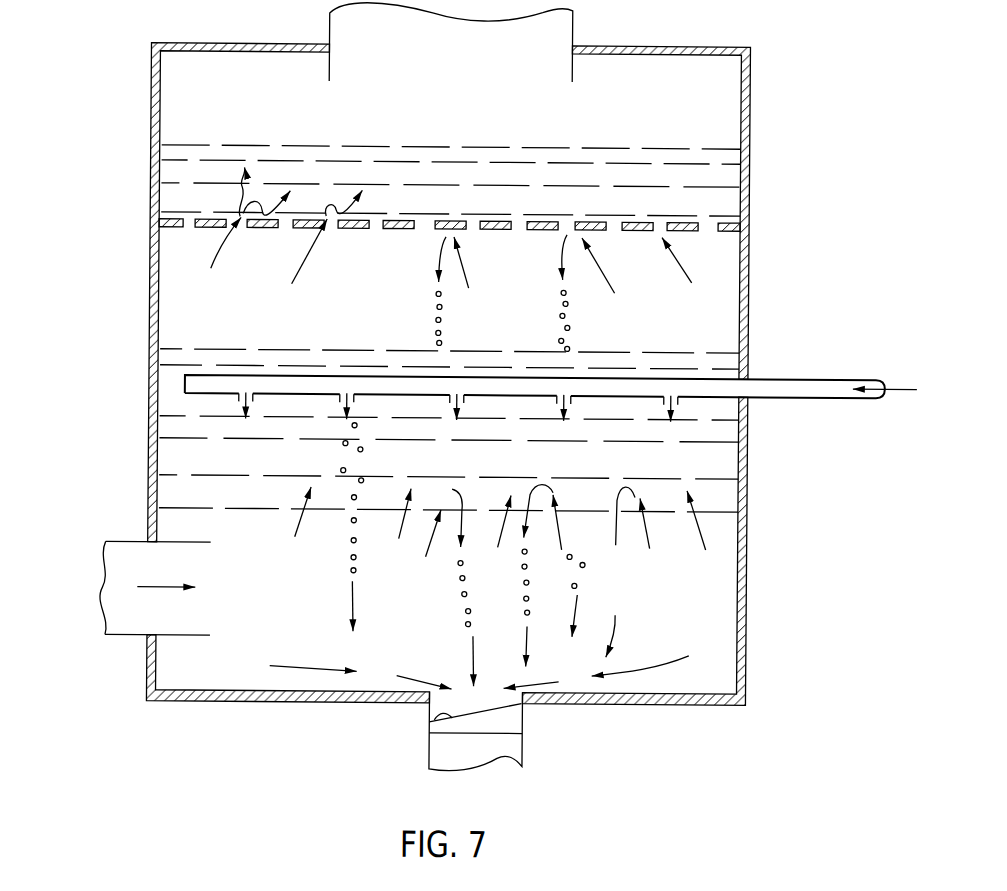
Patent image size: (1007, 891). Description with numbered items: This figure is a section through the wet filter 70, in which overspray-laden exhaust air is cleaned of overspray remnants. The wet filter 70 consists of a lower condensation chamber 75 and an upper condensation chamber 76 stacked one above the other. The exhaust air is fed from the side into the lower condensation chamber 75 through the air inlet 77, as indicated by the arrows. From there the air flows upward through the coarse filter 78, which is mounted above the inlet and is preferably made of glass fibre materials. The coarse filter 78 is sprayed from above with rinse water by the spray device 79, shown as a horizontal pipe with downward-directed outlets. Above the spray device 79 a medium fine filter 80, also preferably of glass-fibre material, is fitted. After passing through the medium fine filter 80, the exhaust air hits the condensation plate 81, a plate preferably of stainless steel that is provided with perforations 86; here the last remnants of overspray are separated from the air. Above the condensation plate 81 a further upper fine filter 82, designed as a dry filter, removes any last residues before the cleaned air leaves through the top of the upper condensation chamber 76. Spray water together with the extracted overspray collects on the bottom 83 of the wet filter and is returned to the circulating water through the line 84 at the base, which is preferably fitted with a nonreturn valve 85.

The wet filter 70 is at (750, 291).
The lower condensation chamber 75 is at (724, 618).
The upper condensation chamber 76 is at (188, 317).
The air inlet 77 is at (137, 630).
The coarse filter 78 is at (723, 463).
The spray device 79 is at (760, 381).
The medium fine filter 80 is at (600, 361).
The condensation plate 81 is at (727, 221).
The upper fine filter 82 is at (183, 145).
The bottom 83 is at (233, 705).
The line 84 is at (526, 745).
The nonreturn valve 85 is at (432, 722).
The perforations 86 is at (189, 222).